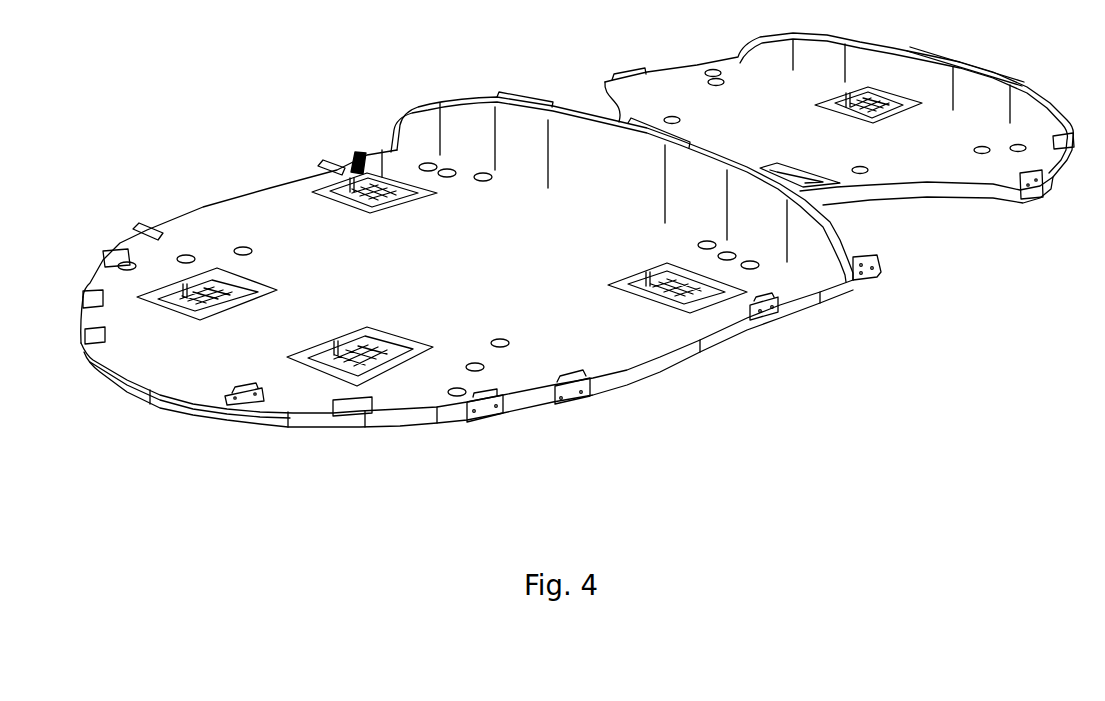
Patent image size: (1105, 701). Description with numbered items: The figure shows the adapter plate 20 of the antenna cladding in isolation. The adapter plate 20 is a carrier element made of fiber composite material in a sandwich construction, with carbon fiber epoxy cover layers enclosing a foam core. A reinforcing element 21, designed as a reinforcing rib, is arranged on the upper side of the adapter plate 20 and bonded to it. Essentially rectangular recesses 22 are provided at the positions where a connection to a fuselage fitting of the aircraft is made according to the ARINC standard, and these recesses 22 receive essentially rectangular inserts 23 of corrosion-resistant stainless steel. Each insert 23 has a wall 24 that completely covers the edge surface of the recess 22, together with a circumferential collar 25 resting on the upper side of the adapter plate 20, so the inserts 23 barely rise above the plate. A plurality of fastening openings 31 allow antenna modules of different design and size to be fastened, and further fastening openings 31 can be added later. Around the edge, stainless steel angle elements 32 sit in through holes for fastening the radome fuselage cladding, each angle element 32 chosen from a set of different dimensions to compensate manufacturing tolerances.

The adapter plate 20 is at (253, 217).
The reinforcing element 21 is at (471, 115).
The recess 22 is at (350, 182).
The insert 23 is at (362, 153).
The wall 24 is at (322, 165).
The circumferential collar 25 is at (382, 182).
The fastening openings 31 is at (242, 248).
The angle elements 32 is at (575, 400).